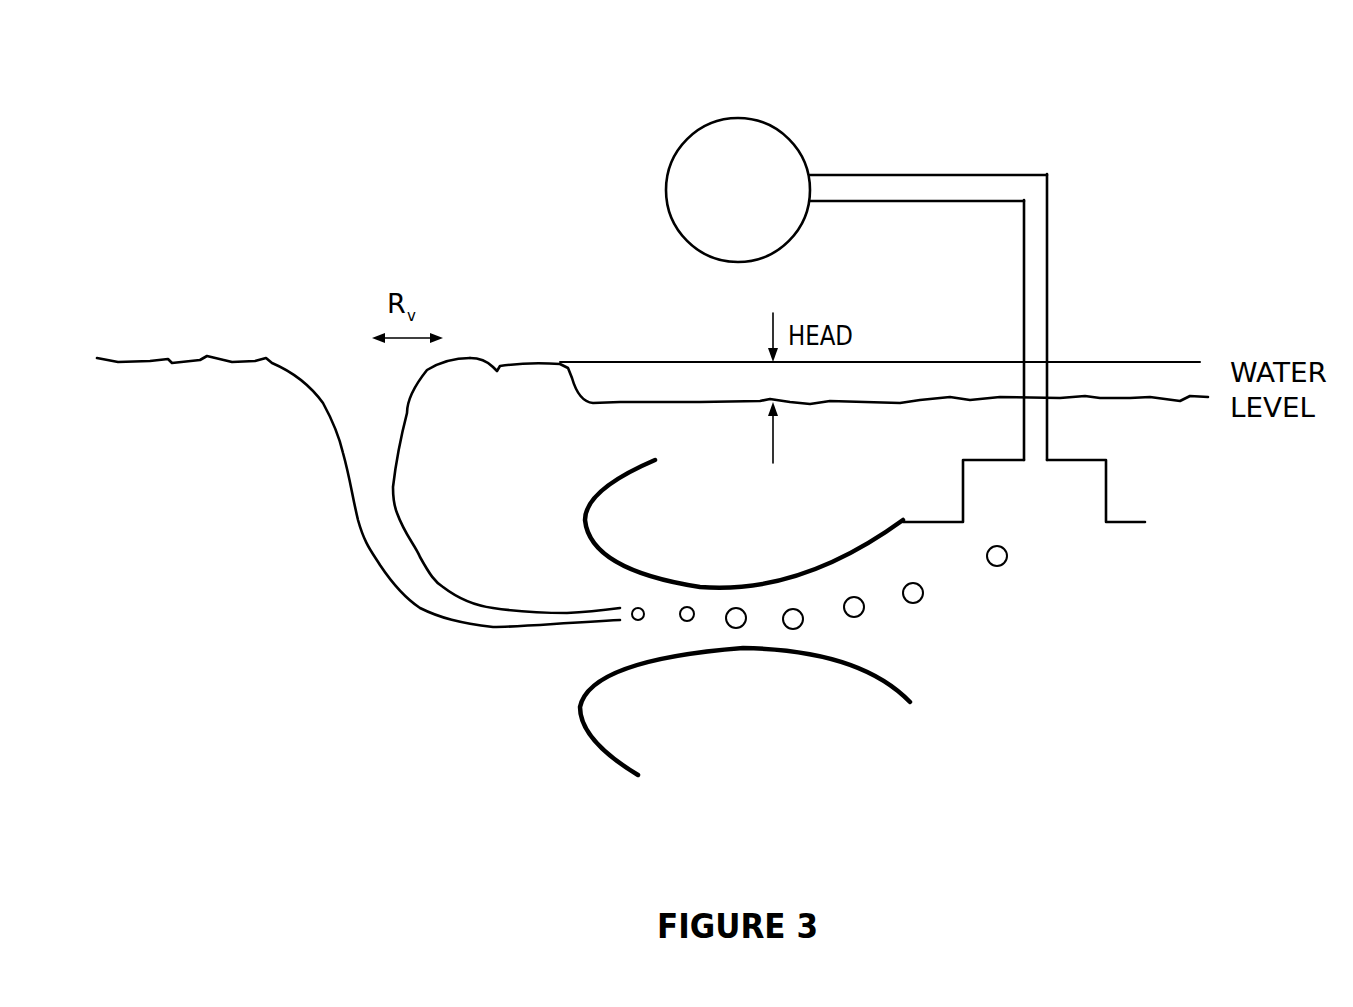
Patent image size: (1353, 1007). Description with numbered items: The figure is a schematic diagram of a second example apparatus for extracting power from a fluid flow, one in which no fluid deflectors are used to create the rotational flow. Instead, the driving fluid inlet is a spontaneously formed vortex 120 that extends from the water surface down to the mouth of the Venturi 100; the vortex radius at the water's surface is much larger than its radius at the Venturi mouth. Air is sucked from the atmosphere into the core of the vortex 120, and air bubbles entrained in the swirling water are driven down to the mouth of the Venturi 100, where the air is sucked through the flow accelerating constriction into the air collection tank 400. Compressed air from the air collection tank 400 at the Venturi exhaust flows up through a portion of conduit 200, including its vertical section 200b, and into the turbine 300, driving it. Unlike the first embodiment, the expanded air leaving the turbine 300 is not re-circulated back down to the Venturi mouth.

The Venturi 100 is at (745, 617).
The spontaneously formed vortex 120 is at (407, 420).
The portion of conduit 200 is at (905, 175).
The vertical pipe section 200b is at (1048, 278).
The turbine 300 is at (738, 118).
The air collection tank 400 is at (1106, 482).